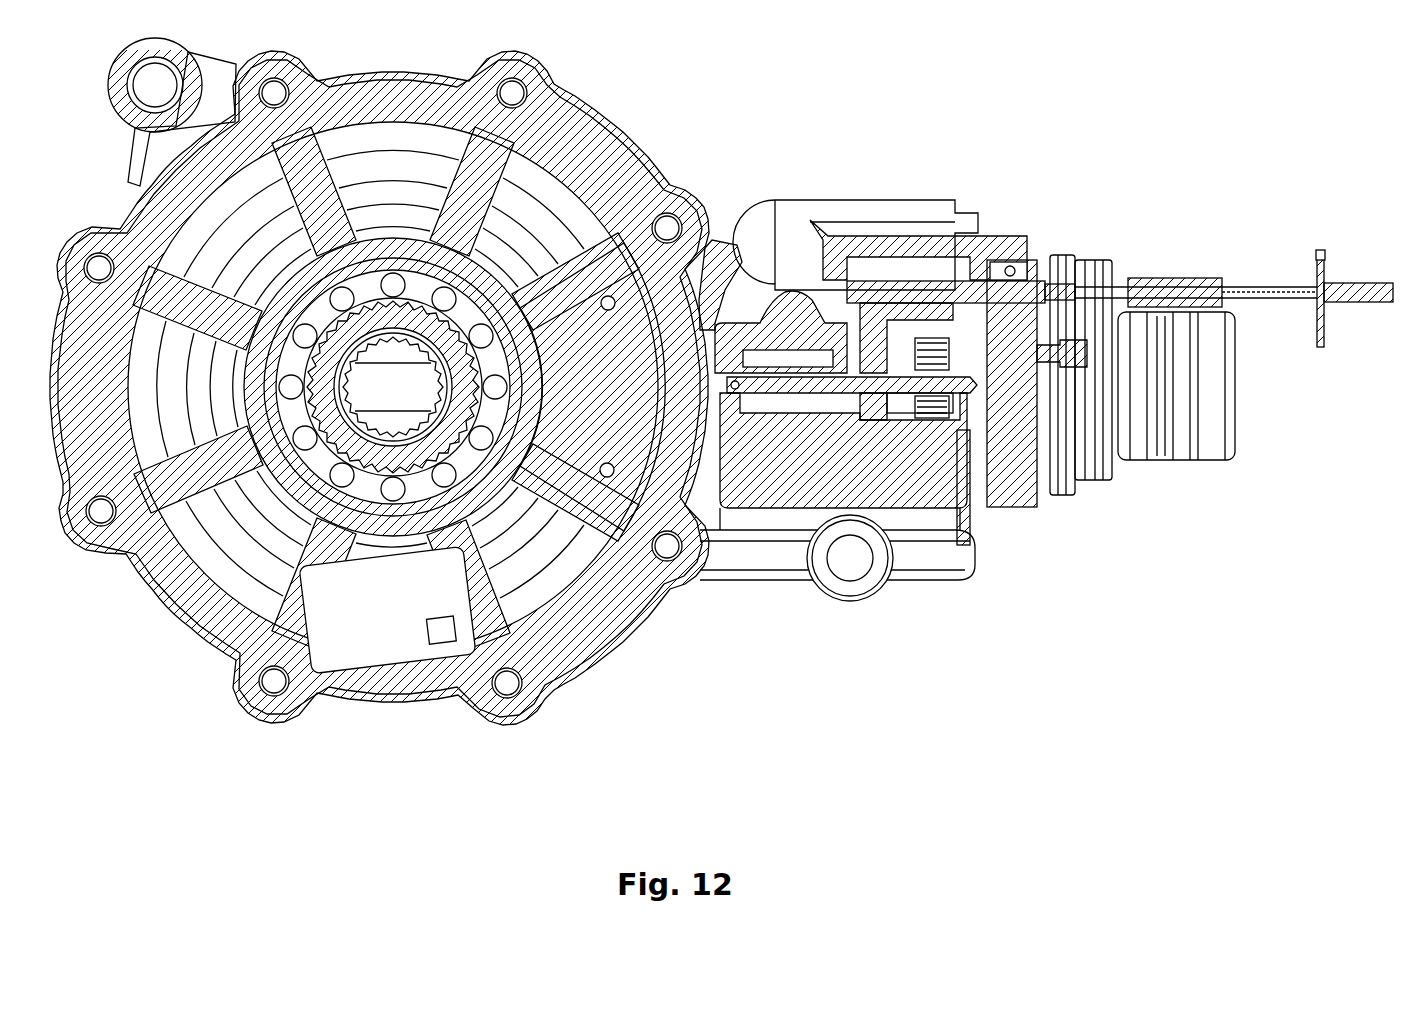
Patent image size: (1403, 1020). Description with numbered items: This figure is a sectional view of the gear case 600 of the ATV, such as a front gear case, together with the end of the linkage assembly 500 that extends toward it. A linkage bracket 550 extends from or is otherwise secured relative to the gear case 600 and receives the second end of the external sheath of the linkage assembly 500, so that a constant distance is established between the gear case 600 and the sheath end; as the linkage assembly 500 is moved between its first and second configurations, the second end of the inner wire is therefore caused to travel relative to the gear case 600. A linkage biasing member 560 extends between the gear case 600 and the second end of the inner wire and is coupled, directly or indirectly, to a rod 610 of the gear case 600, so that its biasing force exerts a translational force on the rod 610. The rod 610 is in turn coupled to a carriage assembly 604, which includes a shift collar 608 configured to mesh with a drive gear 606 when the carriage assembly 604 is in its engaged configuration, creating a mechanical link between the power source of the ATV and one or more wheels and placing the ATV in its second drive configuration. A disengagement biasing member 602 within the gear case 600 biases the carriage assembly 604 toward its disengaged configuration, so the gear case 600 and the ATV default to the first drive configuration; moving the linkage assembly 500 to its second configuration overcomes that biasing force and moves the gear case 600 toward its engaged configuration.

The linkage assembly 500 is at (1347, 387).
The linkage bracket 550 is at (1320, 253).
The linkage biasing member 560 is at (1175, 278).
The gear case 600 is at (650, 126).
The disengagement biasing member 602 is at (977, 400).
The carriage assembly 604 is at (795, 403).
The drive gear 606 is at (940, 335).
The shift collar 608 is at (900, 295).
The rod 610 is at (978, 290).